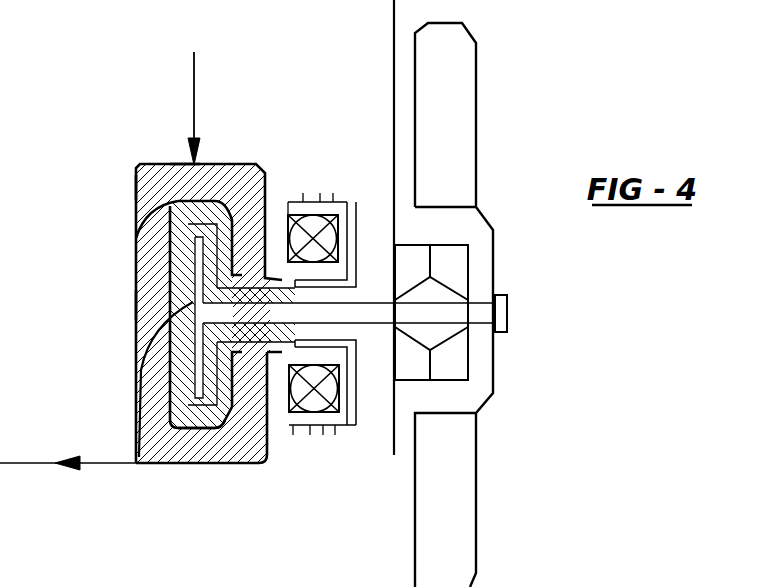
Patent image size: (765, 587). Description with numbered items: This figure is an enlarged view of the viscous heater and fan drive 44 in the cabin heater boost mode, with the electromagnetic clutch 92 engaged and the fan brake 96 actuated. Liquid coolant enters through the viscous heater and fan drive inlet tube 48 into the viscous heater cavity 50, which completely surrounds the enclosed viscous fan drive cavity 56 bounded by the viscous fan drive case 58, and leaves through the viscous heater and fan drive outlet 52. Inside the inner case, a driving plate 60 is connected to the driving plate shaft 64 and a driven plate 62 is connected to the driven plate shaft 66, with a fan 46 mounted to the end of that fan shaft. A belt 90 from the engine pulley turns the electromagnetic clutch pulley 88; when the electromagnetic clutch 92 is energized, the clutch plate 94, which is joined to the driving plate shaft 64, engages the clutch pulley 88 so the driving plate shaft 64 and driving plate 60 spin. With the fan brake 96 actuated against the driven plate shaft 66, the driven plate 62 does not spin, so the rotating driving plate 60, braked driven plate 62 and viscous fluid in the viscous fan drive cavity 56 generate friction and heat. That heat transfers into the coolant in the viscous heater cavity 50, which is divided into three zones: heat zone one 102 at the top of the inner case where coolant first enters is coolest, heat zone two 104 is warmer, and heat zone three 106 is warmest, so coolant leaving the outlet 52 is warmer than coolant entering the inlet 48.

The viscous heater and fan drive 44 is at (137, 167).
The fan 46 is at (477, 137).
The viscous heater and fan drive inlet tube 48 is at (194, 114).
The viscous heater cavity 50 is at (178, 182).
The viscous heater and fan drive outlet 52 is at (113, 466).
The viscous fan drive cavity 56 is at (187, 236).
The viscous fan drive case 58 is at (195, 428).
The driving plate 60 is at (218, 428).
The driven plate 62 is at (193, 302).
The driving plate shaft 64 is at (285, 345).
The driven plate shaft 66 is at (480, 327).
The electromagnetic clutch pulley 88 is at (331, 193).
The belt 90 is at (325, 447).
The electromagnetic clutch 92 is at (288, 208).
The clutch plate 94 is at (355, 212).
The fan brake 96 is at (468, 268).
The heat zone one 102 is at (150, 190).
The heat zone two 104 is at (152, 302).
The heat zone three 106 is at (160, 449).